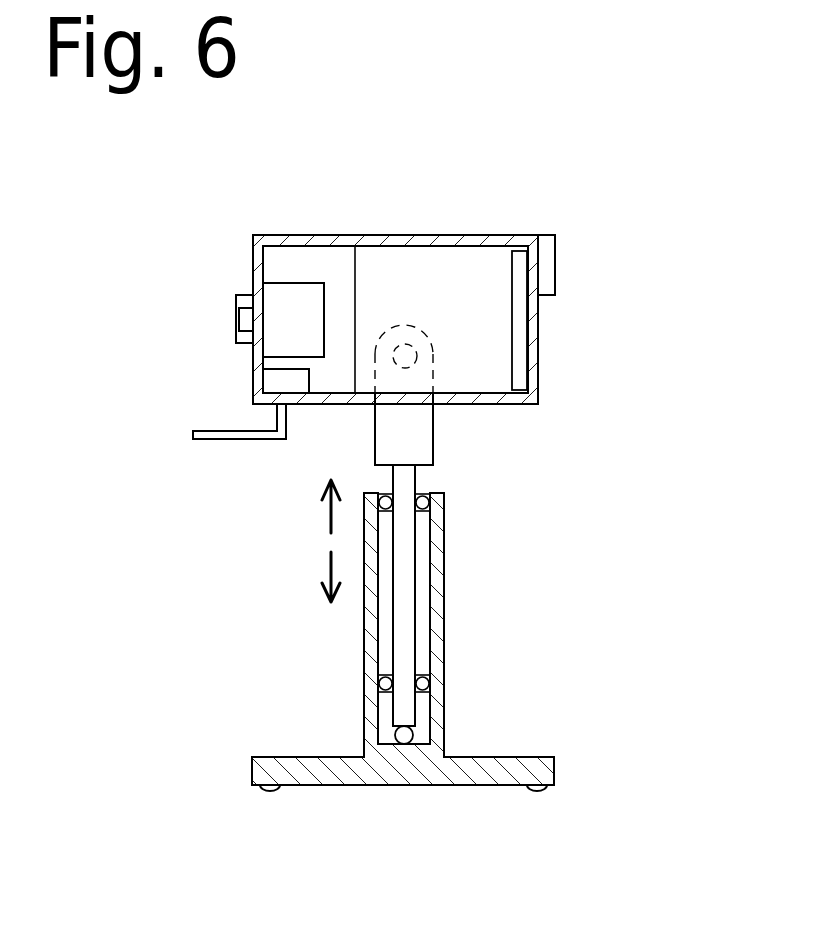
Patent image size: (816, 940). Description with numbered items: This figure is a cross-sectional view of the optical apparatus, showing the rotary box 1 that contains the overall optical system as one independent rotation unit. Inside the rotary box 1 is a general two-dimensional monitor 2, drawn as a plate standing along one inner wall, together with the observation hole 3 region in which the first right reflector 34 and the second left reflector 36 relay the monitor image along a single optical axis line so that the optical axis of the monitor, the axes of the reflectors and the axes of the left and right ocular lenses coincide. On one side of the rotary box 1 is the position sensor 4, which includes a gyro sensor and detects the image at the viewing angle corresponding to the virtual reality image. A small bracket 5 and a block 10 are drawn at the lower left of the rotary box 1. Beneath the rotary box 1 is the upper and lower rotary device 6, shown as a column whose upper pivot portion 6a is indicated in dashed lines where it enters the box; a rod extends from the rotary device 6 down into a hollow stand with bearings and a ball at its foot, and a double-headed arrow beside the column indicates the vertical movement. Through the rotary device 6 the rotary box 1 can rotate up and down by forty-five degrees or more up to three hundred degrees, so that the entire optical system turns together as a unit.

The rotary box 1 is at (460, 237).
The 2D monitor 2 is at (518, 345).
The observation hole 3 is at (241, 318).
The first right reflector 34 is at (291, 296).
The second left reflector 36 is at (298, 258).
The position sensor 4 is at (550, 271).
The bracket 5 is at (228, 436).
The upper and lower rotary device 6 is at (422, 432).
The pivot portion 6a is at (402, 358).
The block 10 is at (267, 382).